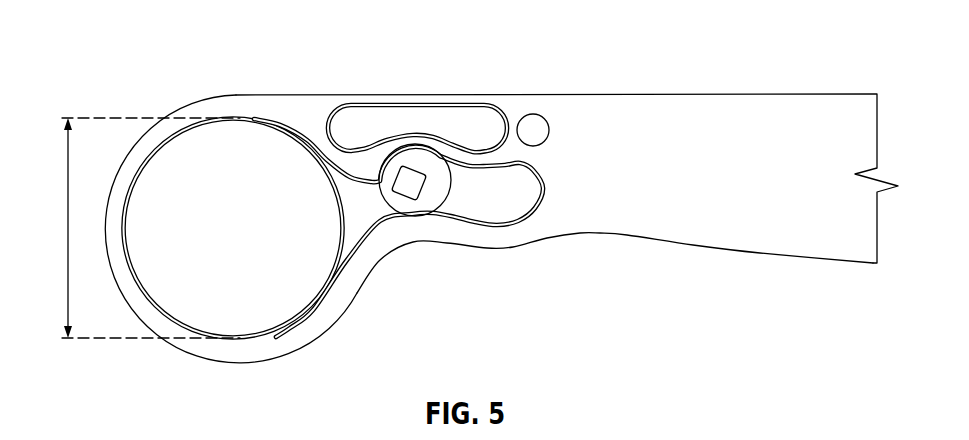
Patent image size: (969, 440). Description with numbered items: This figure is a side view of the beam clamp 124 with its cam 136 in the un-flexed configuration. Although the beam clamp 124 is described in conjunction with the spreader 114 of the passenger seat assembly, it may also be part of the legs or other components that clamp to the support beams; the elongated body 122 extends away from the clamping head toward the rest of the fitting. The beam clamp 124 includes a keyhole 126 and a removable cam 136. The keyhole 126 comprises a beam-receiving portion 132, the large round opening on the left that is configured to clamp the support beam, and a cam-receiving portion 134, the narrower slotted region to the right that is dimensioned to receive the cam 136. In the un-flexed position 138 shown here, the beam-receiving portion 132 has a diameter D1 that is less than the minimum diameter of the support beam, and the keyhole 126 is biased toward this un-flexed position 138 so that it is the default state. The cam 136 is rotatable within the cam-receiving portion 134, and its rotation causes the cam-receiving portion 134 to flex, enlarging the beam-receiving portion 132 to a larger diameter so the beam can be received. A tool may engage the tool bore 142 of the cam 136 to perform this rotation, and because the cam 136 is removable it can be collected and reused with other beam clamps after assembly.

The spreader 114 is at (463, 184).
The bracket body 122 is at (506, 90).
The beam clamp 124 is at (320, 307).
The keyhole 126 is at (238, 116).
The beam-receiving portion 132 is at (263, 118).
The cam-receiving portion 134 is at (486, 166).
The cam 136 is at (385, 191).
The un-flexed position 138 is at (310, 186).
The tool bore 142 is at (403, 200).